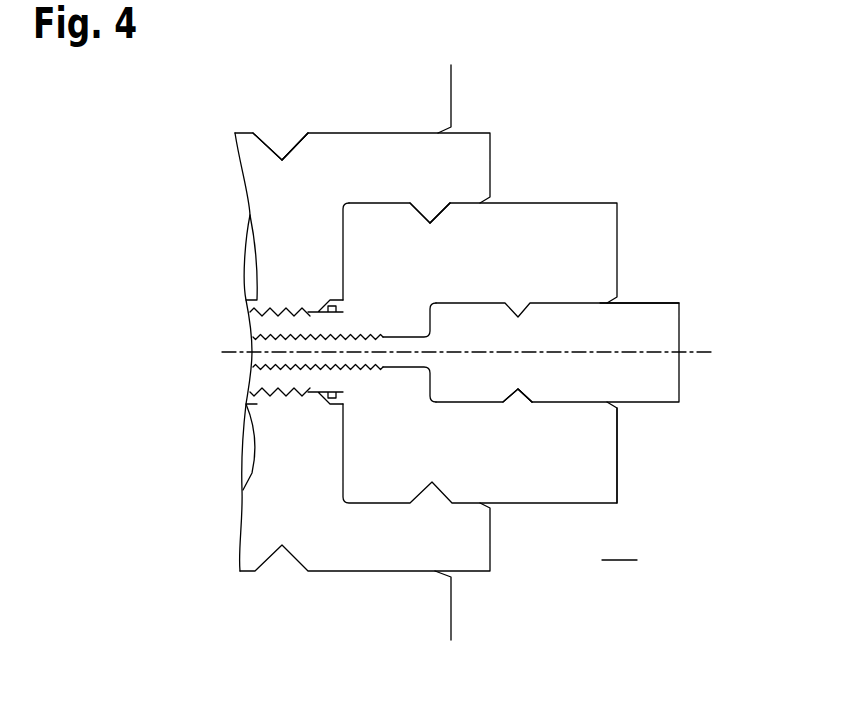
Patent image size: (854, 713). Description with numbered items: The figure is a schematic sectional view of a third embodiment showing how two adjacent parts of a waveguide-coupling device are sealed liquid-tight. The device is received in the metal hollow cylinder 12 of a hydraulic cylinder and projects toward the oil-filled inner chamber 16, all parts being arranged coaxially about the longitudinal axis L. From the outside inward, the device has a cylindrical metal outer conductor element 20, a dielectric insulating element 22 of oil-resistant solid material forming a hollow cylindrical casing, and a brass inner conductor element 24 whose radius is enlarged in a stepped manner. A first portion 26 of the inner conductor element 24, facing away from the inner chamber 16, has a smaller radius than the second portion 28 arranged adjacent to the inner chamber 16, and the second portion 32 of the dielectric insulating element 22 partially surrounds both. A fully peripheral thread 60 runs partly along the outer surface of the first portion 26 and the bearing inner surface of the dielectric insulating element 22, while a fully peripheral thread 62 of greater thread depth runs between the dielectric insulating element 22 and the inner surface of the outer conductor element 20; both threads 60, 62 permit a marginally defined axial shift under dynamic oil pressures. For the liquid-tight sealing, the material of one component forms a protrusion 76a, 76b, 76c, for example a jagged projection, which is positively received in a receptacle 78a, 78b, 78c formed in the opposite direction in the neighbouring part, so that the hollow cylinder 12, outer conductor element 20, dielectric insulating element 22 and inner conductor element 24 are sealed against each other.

The metal hollow cylinder 12 is at (432, 89).
The inner chamber 16 is at (619, 544).
The outer conductor element 20 is at (498, 563).
The dielectric insulating element 22 is at (624, 493).
The inner conductor element 24 is at (687, 389).
The first portion of the inner conductor element 26 is at (400, 369).
The second portion of the inner conductor element 28 is at (657, 302).
The second portion of the dielectric insulating element 32 is at (600, 449).
The thread 60 is at (291, 336).
The thread 62 is at (291, 394).
The protrusion 76a is at (519, 396).
The protrusion 76b is at (437, 215).
The protrusion 76c is at (283, 140).
The receptacle 78a is at (524, 393).
The receptacle 78b is at (440, 218).
The receptacle 78c is at (297, 150).
The longitudinal axis L is at (702, 350).